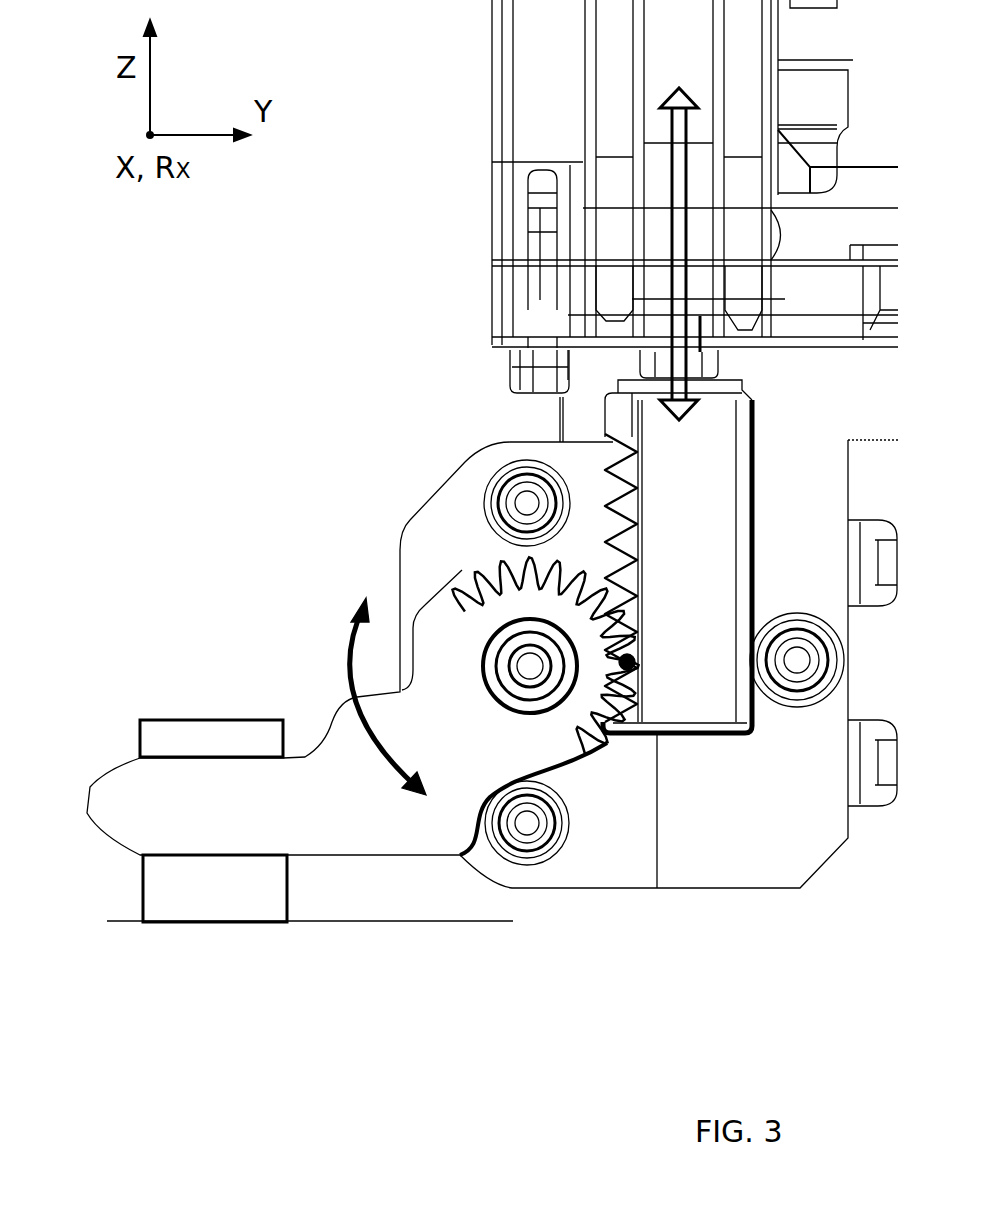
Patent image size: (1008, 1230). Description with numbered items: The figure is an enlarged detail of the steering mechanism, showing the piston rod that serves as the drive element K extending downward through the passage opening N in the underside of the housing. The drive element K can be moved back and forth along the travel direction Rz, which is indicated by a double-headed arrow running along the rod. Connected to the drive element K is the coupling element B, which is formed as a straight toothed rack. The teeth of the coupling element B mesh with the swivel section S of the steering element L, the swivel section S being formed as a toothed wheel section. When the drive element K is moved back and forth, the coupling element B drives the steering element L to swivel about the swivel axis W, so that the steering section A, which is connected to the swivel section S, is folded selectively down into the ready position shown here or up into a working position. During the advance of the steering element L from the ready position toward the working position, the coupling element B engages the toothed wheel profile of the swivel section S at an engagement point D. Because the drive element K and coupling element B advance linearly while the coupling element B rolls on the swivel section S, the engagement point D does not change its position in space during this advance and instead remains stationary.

The steering element L is at (258, 672).
The swivel section S is at (427, 667).
The coupling element B is at (662, 484).
The steering section A is at (153, 807).
The travel direction Rz is at (682, 220).
The drive element K is at (662, 325).
The passage opening N is at (728, 357).
The swivel axis W is at (530, 666).
The engagement point D is at (657, 684).